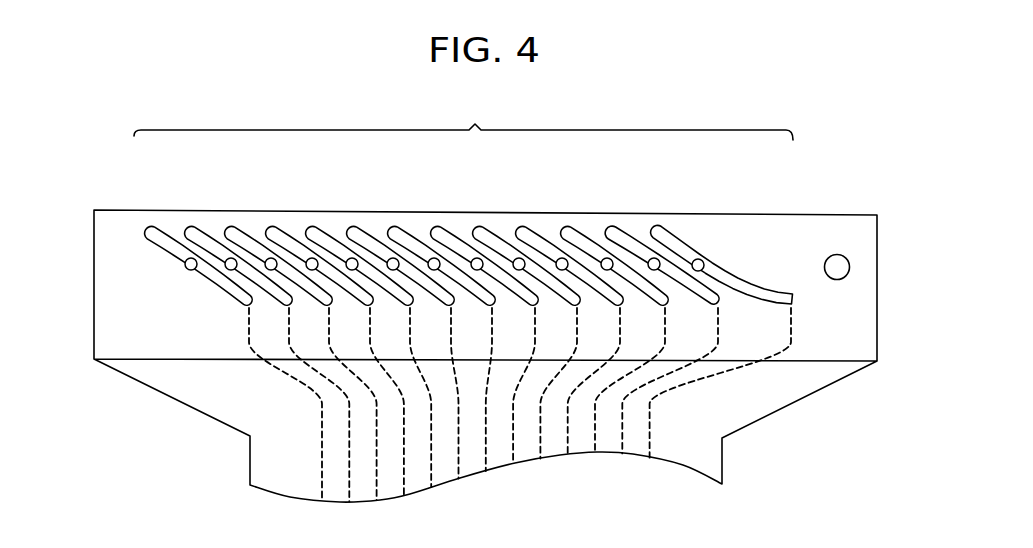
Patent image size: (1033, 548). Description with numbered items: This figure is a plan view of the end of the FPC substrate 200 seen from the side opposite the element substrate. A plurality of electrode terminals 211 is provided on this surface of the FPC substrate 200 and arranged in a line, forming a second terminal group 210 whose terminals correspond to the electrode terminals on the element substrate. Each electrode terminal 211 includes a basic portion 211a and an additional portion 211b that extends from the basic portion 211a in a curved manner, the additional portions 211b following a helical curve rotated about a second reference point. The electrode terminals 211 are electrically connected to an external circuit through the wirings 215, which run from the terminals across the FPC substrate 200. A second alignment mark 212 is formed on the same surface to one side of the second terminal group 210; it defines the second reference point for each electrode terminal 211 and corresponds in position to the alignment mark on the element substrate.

The FPC substrate 200 is at (147, 430).
The second terminal group 210 is at (463, 199).
The electrode terminal 211 is at (553, 217).
The basic portion 211a is at (703, 259).
The additional portion 211b is at (683, 250).
The second alignment mark 212 is at (838, 254).
The wiring 215 is at (290, 368).